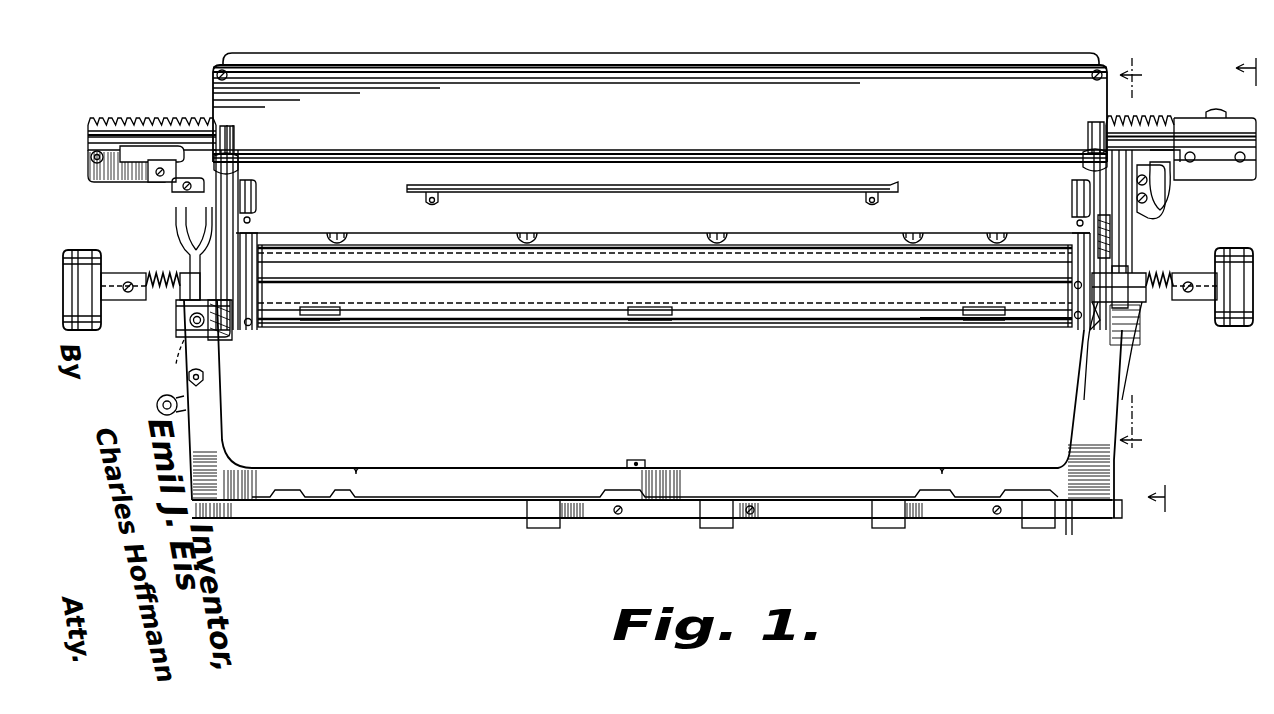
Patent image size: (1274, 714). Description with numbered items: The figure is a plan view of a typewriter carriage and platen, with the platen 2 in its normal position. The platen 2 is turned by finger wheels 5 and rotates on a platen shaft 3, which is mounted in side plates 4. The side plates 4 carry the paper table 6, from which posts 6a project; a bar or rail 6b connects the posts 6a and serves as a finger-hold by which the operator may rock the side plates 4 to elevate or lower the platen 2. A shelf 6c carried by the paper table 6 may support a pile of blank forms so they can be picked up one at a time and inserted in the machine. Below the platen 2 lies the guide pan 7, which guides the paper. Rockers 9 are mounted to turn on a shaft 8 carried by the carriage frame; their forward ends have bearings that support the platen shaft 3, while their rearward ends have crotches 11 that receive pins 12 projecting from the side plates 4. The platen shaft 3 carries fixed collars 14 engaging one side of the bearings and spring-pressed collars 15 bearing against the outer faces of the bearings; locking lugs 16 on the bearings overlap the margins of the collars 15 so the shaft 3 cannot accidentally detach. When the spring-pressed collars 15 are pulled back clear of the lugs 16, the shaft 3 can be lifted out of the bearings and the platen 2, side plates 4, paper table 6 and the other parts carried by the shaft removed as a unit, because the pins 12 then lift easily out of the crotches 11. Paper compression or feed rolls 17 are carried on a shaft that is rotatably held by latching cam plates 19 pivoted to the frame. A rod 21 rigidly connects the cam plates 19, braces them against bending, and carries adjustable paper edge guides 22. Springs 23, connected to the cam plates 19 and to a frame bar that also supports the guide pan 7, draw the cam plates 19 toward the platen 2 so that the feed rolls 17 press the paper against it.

The platen 2 is at (665, 286).
The platen shaft 3 is at (1045, 348).
The side plates 4 is at (1090, 256).
The finger wheels 5 is at (92, 262).
The paper table 6 is at (660, 107).
The posts 6a is at (238, 137).
The bar or rail 6b is at (905, 148).
The shelf 6c is at (649, 192).
The guide pan 7 is at (1003, 468).
The shaft 8 is at (172, 188).
The rockers 9 is at (176, 212).
The crotches 11 is at (150, 170).
The pins 12 is at (218, 140).
The fixed collars 14 is at (228, 334).
The spring-pressed collars 15 is at (180, 316).
The locking lugs 16 is at (180, 274).
The paper compression or feed rolls 17 is at (322, 328).
The latching cam plates 19 is at (258, 229).
The rod 21 is at (938, 328).
The adjustable paper edge guides 22 is at (257, 278).
The springs 23 is at (665, 203).